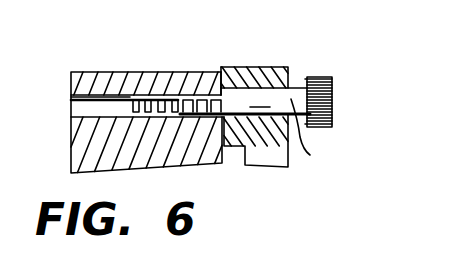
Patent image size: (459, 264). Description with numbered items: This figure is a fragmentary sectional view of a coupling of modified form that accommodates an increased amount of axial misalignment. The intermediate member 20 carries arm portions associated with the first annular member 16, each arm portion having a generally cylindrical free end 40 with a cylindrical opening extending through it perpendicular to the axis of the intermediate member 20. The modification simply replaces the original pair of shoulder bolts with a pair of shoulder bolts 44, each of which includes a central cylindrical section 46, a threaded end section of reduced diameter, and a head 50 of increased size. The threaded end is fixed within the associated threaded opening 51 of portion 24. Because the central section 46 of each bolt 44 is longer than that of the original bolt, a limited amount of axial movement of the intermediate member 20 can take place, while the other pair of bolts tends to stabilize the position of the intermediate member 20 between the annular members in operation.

The first annular member 16 is at (85, 71).
The intermediate member 20 is at (203, 100).
The portion 24 is at (141, 95).
The threaded opening 51 is at (171, 90).
The free end 40 is at (260, 67).
The shoulder bolt 44 is at (410, 47).
The head 50 is at (410, 93).
The central cylindrical section 46 is at (370, 148).